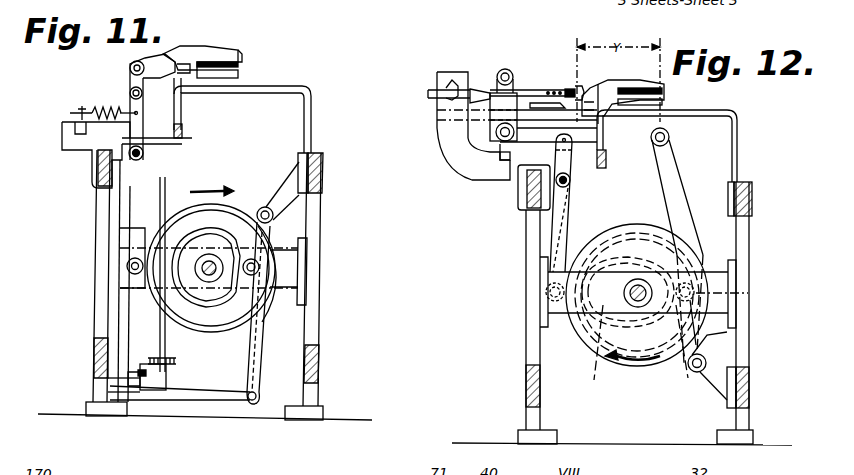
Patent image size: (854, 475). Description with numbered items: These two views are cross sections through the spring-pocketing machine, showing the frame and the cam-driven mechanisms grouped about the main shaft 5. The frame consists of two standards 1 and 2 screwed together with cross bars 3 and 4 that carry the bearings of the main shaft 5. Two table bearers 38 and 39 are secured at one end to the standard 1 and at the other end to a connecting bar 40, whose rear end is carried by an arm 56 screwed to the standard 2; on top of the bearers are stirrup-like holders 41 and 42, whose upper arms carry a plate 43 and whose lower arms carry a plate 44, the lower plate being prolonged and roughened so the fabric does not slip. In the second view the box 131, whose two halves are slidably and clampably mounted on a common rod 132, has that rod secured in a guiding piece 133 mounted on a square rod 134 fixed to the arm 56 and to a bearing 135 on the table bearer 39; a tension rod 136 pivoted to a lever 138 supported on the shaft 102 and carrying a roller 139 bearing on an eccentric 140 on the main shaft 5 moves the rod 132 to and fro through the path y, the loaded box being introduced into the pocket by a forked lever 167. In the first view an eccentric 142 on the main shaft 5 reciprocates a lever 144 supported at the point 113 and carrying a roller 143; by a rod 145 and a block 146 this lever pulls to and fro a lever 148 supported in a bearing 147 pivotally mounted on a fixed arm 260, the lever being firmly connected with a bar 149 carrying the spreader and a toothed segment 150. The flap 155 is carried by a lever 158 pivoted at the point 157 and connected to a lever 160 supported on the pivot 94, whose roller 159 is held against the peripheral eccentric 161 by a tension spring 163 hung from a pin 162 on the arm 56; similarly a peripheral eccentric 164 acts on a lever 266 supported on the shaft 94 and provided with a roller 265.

In FIG. 11, the standard 1 is at (320, 210).
In FIG. 12, the standard 1 is at (750, 226).
In FIG. 11, the standard 2 is at (96, 209).
In FIG. 12, the standard 2 is at (528, 354).
In FIG. 12, the cross bar 3 is at (540, 318).
In FIG. 11, the cross bar 4 is at (114, 296).
In FIG. 11, the main shaft 5 is at (209, 262).
In FIG. 12, the main shaft 5 is at (624, 293).
In FIG. 11, the table bearer 38 is at (312, 125).
In FIG. 12, the table bearer 39 is at (739, 148).
In FIG. 11, the connecting bar 40 is at (192, 138).
In FIG. 12, the connecting bar 40 is at (606, 166).
In FIG. 11, the stirrup-like holder 41 is at (240, 52).
In FIG. 12, the stirrup-like holder 42 is at (612, 82).
In FIG. 11, the plate 43 is at (242, 64).
In FIG. 12, the plate 43 is at (664, 92).
In FIG. 11, the plate 44 is at (240, 76).
In FIG. 12, the plate 44 is at (664, 102).
In FIG. 11, the arm 56 is at (76, 150).
In FIG. 12, the arm 56 is at (502, 178).
In FIG. 11, the pivot 94 is at (146, 153).
In FIG. 12, the pivot 94 is at (572, 184).
In FIG. 12, the shaft 102 is at (706, 362).
In FIG. 11, the point 113 is at (270, 220).
In FIG. 12, the box 131 is at (530, 91).
In FIG. 12, the rod 132 is at (512, 74).
In FIG. 12, the guiding piece 133 is at (500, 104).
In FIG. 12, the square rod 134 is at (482, 118).
In FIG. 12, the bearing 135 is at (670, 130).
In FIG. 12, the tension rod 136 is at (540, 137).
In FIG. 12, the lever 138 is at (677, 180).
In FIG. 12, the roller 139 is at (750, 295).
In FIG. 12, the eccentric 140 is at (600, 330).
In FIG. 11, the eccentric 142 is at (176, 228).
In FIG. 11, the roller 143 is at (256, 276).
In FIG. 11, the lever 144 is at (259, 372).
In FIG. 11, the rod 145 is at (226, 400).
In FIG. 11, the block 146 is at (100, 398).
In FIG. 11, the bearing 147 is at (166, 372).
In FIG. 11, the lever 148 is at (108, 382).
In FIG. 11, the bar 149 is at (160, 338).
In FIG. 11, the toothed segment 150 is at (178, 358).
In FIG. 11, the flap 155 is at (186, 62).
In FIG. 11, the point 157 is at (130, 68).
In FIG. 11, the lever 158 is at (130, 78).
In FIG. 11, the roller 159 is at (126, 266).
In FIG. 11, the lever 160 is at (136, 206).
In FIG. 11, the peripheral eccentric 161 is at (244, 218).
In FIG. 11, the pin 162 is at (70, 113).
In FIG. 11, the tension spring 163 is at (124, 108).
In FIG. 12, the peripheral eccentric 164 is at (670, 360).
In FIG. 12, the forked lever 167 is at (430, 92).
In FIG. 11, the fixed arm 260 is at (128, 370).
In FIG. 12, the roller 265 is at (546, 293).
In FIG. 12, the lever 266 is at (556, 222).